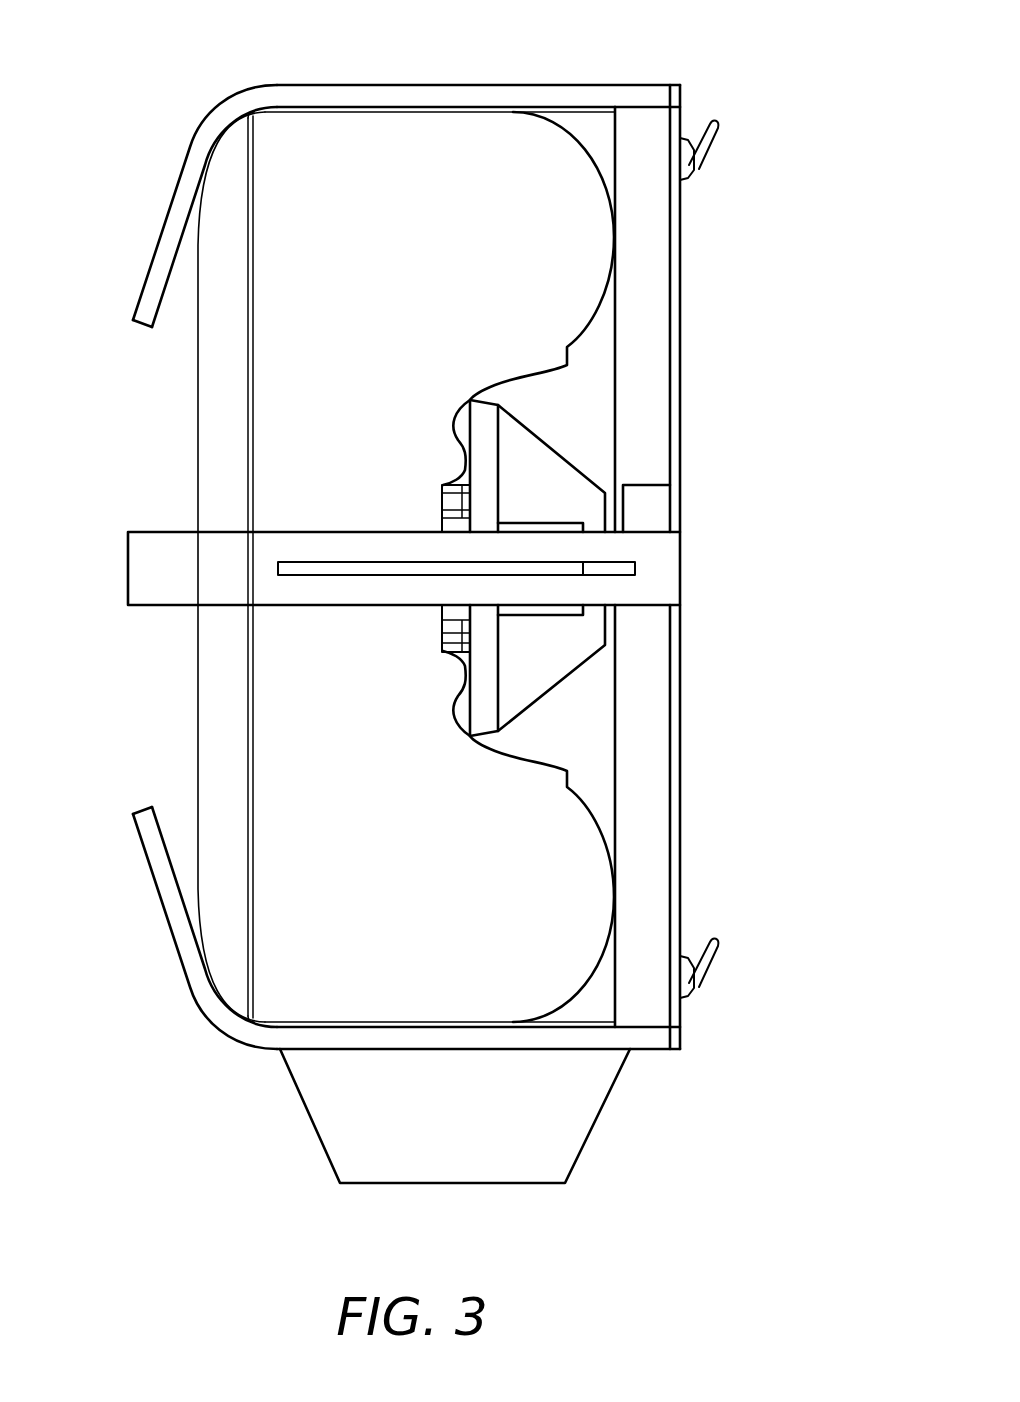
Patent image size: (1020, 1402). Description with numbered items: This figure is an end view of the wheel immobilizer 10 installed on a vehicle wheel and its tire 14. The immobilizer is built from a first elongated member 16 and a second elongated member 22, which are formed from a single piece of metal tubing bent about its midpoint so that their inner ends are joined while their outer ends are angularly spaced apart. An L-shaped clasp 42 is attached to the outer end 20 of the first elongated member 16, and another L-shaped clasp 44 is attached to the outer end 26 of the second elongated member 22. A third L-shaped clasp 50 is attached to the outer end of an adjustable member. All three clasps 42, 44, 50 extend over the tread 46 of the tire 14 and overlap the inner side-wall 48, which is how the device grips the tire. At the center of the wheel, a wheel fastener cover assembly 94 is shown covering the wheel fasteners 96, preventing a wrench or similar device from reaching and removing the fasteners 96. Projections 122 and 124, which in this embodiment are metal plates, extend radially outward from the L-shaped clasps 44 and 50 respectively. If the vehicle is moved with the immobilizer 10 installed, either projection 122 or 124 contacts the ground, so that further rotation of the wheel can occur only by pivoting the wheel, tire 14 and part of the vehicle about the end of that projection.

The wheel immobilizer 10 is at (707, 222).
The tire 14 is at (323, 392).
The first elongated member 16 is at (643, 342).
The outer end 20 is at (645, 108).
The second elongated member 22 is at (642, 796).
The outer end 26 is at (644, 1027).
The L-shaped clasp 42 is at (466, 85).
The L-shaped clasp 44 is at (220, 1033).
The tread 46 is at (400, 115).
The inner side-wall 48 is at (198, 267).
The L-shaped clasp 50 is at (157, 570).
The wheel fastener cover assembly 94 is at (552, 445).
The wheel fasteners 96 is at (452, 512).
The projection 122 is at (412, 1137).
The projection 124 is at (378, 560).